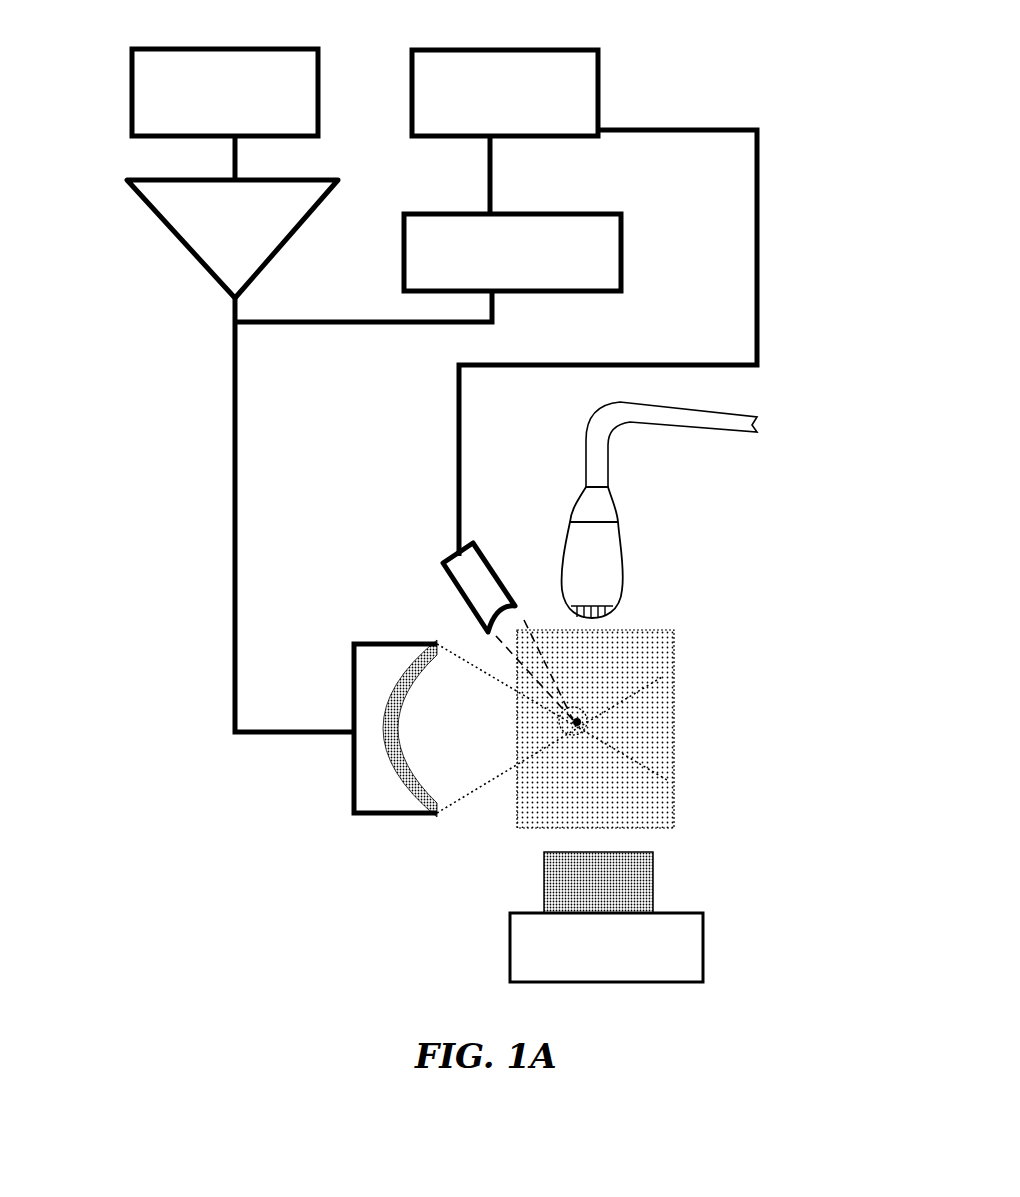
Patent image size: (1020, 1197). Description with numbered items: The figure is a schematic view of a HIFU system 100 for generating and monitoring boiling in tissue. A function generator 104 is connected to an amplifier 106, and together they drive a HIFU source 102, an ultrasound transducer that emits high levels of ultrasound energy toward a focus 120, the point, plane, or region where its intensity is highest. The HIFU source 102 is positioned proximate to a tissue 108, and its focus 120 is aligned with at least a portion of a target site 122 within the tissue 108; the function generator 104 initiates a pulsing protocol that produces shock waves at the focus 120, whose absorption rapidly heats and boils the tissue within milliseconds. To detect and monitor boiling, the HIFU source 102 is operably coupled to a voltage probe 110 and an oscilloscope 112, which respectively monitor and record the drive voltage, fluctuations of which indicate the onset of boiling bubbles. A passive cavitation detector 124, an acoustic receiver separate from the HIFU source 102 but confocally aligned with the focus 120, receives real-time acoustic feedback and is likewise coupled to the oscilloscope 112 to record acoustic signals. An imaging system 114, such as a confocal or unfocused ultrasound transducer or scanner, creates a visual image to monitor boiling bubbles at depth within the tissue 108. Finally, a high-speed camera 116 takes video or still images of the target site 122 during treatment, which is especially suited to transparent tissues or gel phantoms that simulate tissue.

The HIFU system 100 is at (772, 110).
The HIFU source 102 is at (385, 644).
The function generator 104 is at (130, 93).
The amplifier 106 is at (172, 240).
The tissue 108 is at (674, 810).
The voltage probe 110 is at (622, 259).
The oscilloscope 112 is at (600, 92).
The imaging system 114 is at (620, 565).
The high-speed camera 116 is at (703, 950).
The focus 120 is at (578, 724).
The target site 122 is at (583, 707).
The passive cavitation detector 124 is at (493, 562).